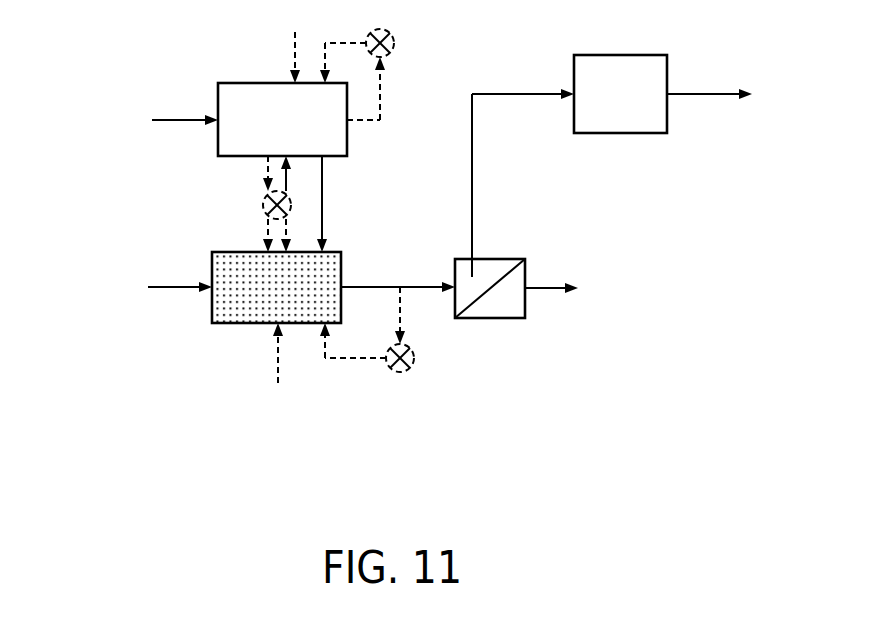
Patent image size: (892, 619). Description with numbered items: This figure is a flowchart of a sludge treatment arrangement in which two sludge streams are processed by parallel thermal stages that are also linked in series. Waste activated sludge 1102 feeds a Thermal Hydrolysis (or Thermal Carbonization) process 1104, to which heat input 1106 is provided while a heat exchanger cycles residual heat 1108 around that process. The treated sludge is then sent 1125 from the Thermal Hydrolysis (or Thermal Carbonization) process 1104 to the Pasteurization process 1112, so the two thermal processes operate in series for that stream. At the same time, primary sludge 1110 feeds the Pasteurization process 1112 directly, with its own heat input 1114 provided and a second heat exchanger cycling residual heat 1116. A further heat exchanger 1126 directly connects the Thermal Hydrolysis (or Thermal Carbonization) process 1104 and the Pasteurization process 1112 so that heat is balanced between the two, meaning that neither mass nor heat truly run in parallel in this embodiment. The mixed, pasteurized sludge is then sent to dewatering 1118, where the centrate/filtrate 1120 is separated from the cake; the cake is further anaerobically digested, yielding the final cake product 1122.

The waste activated sludge 1102 is at (153, 118).
The Thermal Hydrolysis (or Thermal Carbonization) process 1104 is at (218, 157).
The heat input 1106 is at (293, 52).
The heat exchanger cycling residual heat 1108 is at (394, 43).
The primary sludge 1110 is at (155, 288).
The Pasteurization process 1112 is at (227, 325).
The heat input 1114 is at (278, 383).
The heat exchanger cycling residual heat 1116 is at (400, 372).
The dewatering 1118 is at (498, 318).
The centrate/filtrate 1120 is at (568, 292).
The final cake product 1122 is at (720, 97).
The sludge sent to Pasteurization 1125 is at (322, 193).
The heat exchanger 1126 is at (263, 205).